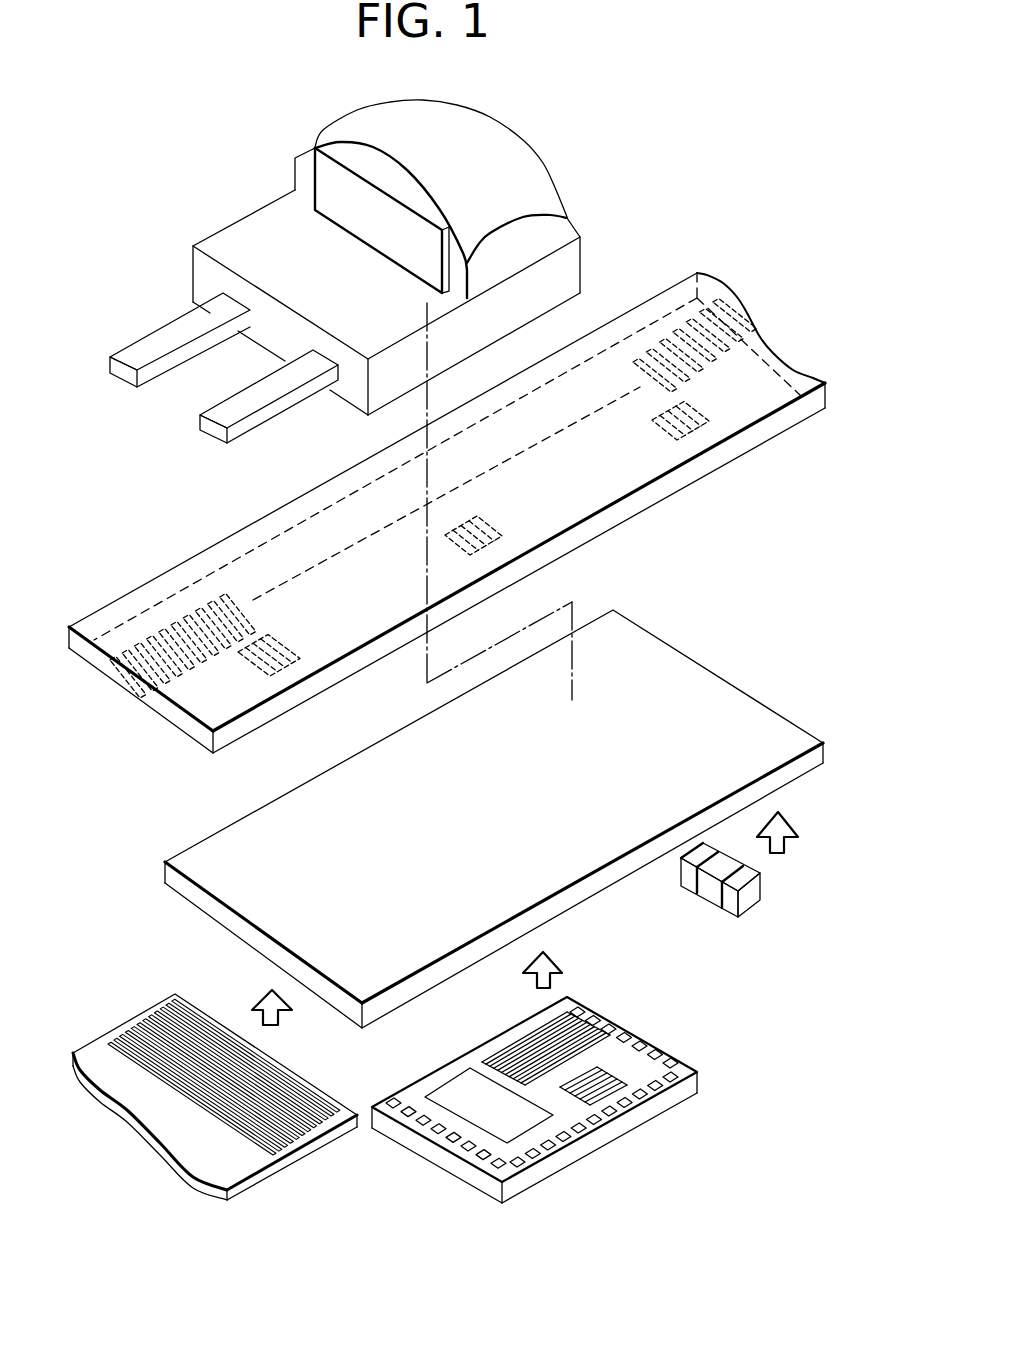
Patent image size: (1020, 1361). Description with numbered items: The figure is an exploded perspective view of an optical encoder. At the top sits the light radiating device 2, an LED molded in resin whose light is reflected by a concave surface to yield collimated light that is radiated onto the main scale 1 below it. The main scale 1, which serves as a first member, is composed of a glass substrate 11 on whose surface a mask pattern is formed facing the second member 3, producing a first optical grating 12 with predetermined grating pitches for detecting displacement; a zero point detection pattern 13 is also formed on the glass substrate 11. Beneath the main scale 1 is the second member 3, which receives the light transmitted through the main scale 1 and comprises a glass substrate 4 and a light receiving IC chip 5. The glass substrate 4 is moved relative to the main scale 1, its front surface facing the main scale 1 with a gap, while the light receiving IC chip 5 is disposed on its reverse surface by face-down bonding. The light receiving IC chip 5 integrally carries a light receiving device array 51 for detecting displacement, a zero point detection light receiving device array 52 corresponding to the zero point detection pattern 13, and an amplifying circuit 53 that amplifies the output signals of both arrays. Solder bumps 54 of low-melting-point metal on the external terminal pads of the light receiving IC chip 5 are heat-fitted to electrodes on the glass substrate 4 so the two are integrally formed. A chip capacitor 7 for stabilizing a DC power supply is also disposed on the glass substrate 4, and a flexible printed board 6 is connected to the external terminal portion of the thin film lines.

The main scale 1 is at (647, 312).
The glass substrate 11 is at (793, 372).
The first optical grating 12 is at (718, 301).
The zero point detection pattern 13 is at (498, 526).
The light radiating device 2 is at (526, 173).
The second member 3 is at (494, 797).
The glass substrate 4 is at (655, 632).
The light receiving IC chip 5 is at (534, 1106).
The light receiving device array 51 is at (517, 1040).
The zero point detection light receiving device array 52 is at (613, 1073).
The amplifying circuit 53 is at (457, 1090).
The solder bumps 54 is at (458, 1160).
The flexible printed board 6 is at (257, 1160).
The chip capacitor 7 is at (753, 902).